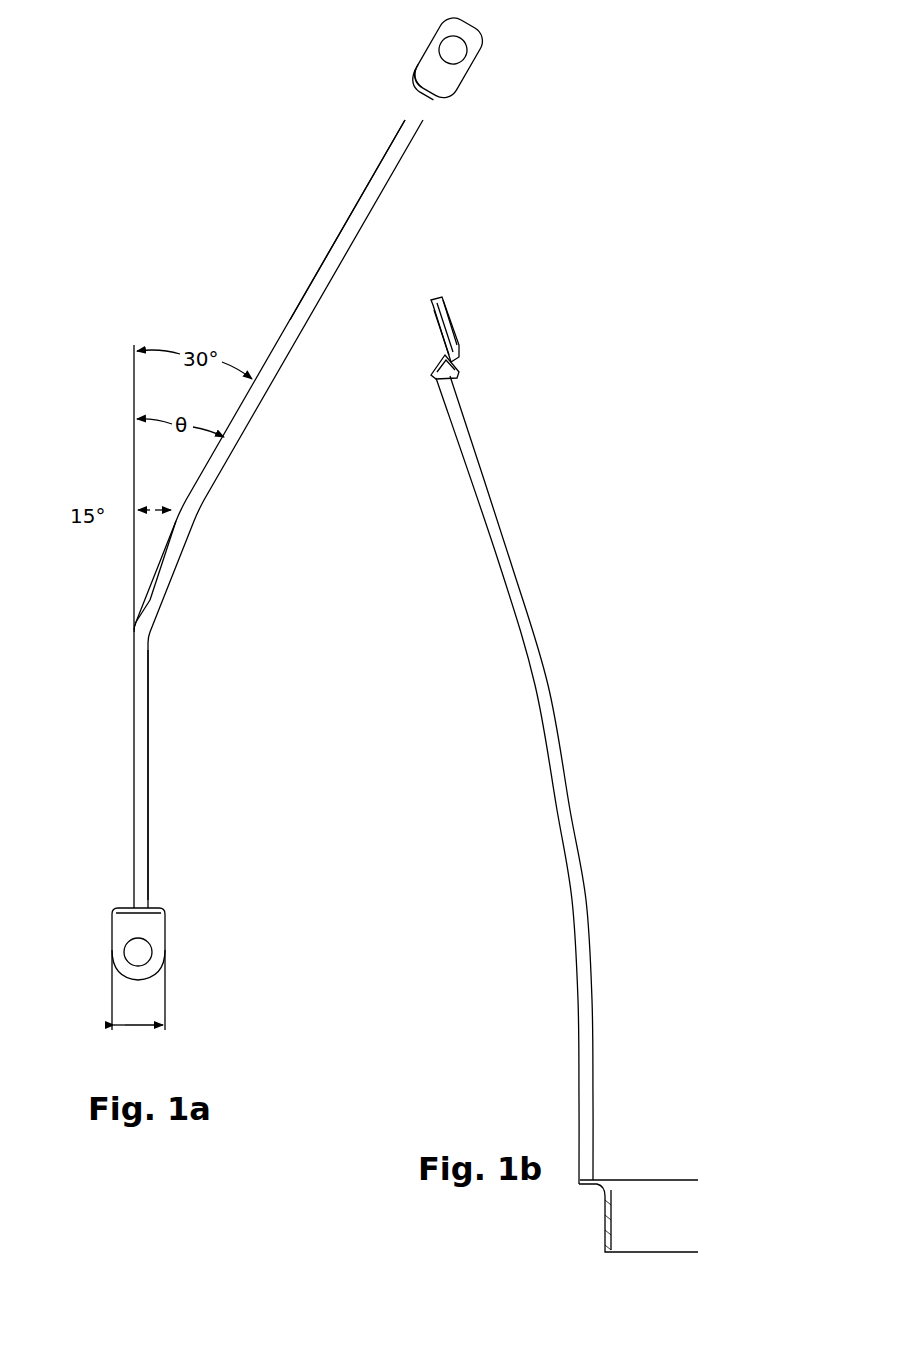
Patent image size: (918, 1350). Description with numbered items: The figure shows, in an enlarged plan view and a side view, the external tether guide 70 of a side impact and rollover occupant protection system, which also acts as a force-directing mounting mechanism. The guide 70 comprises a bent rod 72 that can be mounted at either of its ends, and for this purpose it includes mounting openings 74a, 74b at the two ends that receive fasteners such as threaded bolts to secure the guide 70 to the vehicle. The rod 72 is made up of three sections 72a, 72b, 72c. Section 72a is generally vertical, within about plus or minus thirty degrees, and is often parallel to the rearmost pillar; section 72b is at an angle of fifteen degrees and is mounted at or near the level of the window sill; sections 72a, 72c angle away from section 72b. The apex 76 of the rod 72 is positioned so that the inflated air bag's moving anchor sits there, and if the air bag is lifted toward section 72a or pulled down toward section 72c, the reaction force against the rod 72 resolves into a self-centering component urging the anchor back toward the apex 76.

In FIG. 1a, the external tether guide 70 is at (191, 522).
In FIG. 1b, the external tether guide 70 is at (578, 908).
In FIG. 1b, the bent rod 72 is at (580, 967).
In FIG. 1a, the first rod section 72a is at (300, 312).
In FIG. 1a, the second rod section 72b is at (162, 577).
In FIG. 1a, the third rod section 72c is at (141, 729).
In FIG. 1a, the mounting opening 74a is at (440, 50).
In FIG. 1a, the mounting opening 74b is at (124, 950).
In FIG. 1a, the apex 76 is at (153, 600).